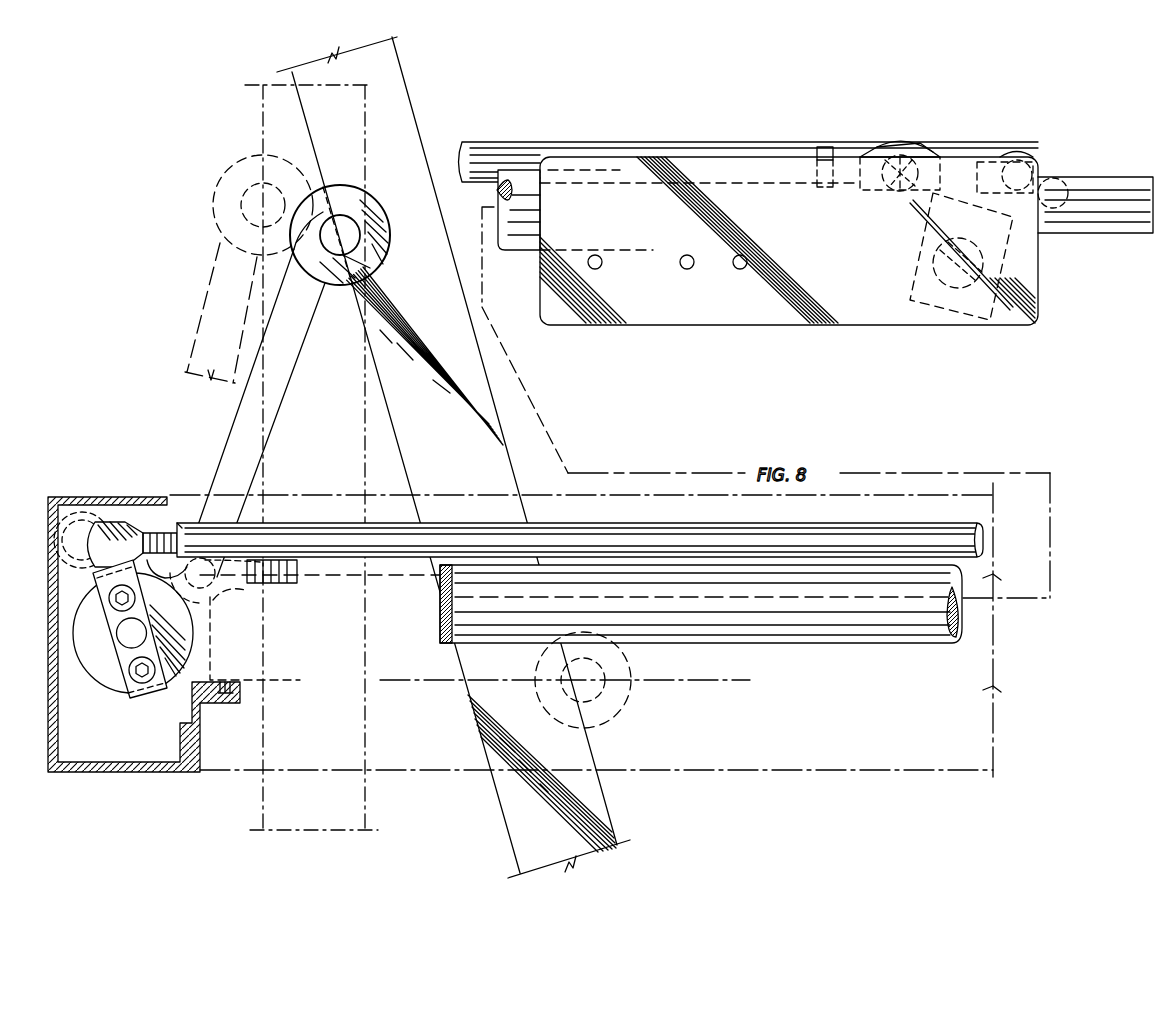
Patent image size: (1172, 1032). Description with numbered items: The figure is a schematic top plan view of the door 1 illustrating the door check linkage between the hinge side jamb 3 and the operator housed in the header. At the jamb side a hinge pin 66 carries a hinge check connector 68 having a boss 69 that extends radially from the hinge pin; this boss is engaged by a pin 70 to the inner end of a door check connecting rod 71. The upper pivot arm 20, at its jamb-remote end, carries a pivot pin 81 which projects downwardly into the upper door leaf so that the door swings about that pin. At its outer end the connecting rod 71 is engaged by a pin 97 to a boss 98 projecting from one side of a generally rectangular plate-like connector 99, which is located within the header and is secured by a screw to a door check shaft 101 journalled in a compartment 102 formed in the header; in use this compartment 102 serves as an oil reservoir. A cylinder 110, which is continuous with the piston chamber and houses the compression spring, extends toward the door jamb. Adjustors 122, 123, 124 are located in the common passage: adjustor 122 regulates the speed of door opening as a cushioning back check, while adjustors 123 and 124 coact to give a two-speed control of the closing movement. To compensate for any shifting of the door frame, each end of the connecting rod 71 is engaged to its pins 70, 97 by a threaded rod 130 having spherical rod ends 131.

The door 1 is at (610, 800).
The side jamb 3 is at (52, 522).
The upper pivot arm 20 is at (228, 433).
The hinge pin 66 is at (117, 635).
The hinge check connector 68 is at (133, 695).
The boss 69 is at (97, 575).
The pin 70 is at (100, 548).
The door check connecting rod 71 is at (643, 522).
The pivot pin 81 is at (327, 235).
The pin 97 is at (920, 152).
The boss 98 is at (950, 155).
The connector 99 is at (1007, 250).
The door check shaft 101 is at (950, 280).
The compartment 102 is at (885, 308).
The cylinder 110 is at (960, 612).
The adjustor 122 is at (595, 267).
The adjustor 123 is at (687, 267).
The adjustor 124 is at (740, 267).
The threaded rod 130 is at (157, 533).
The spherical rod ends 131 is at (113, 520).